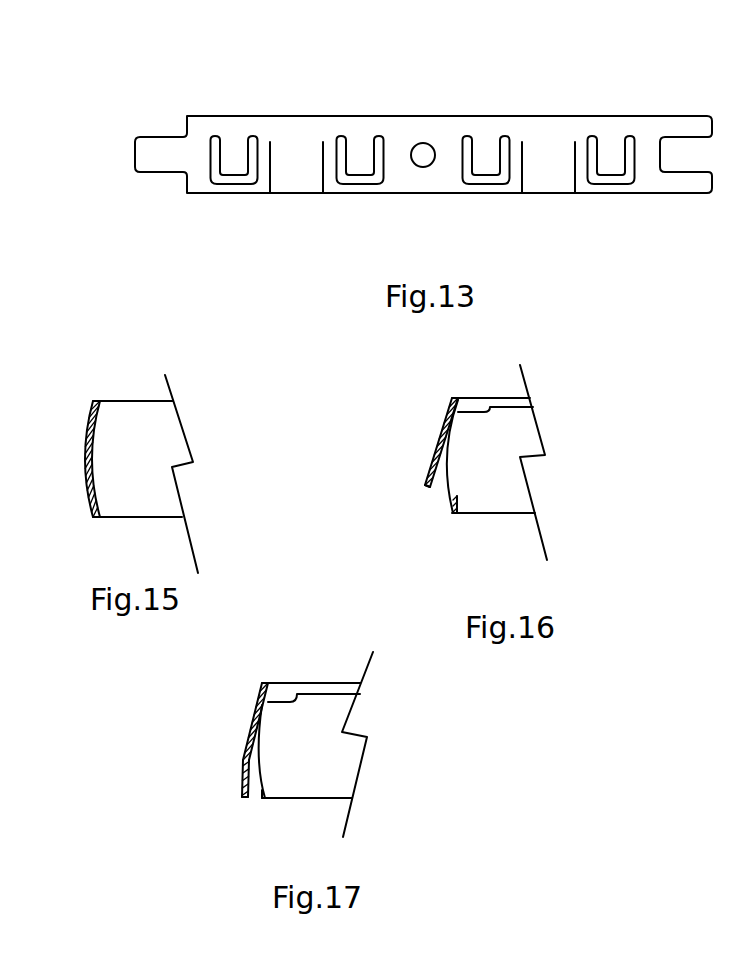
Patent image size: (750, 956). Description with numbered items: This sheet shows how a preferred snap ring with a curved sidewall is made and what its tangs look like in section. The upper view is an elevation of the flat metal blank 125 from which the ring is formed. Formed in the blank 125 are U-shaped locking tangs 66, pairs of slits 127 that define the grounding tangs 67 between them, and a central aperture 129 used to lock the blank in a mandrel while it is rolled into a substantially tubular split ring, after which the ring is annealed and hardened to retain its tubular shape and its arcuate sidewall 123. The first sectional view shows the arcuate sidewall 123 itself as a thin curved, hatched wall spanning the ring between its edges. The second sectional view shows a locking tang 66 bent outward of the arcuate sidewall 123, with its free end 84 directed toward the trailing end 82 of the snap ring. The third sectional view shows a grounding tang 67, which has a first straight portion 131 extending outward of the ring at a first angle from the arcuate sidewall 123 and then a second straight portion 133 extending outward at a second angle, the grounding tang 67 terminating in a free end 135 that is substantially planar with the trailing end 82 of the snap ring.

In FIG. 13, the flat metal blank 125 is at (144, 118).
In FIG. 13, the locking tang 66 is at (234, 168).
In FIG. 16, the locking tang 66 is at (437, 461).
In FIG. 13, the grounding tang 67 is at (547, 183).
In FIG. 17, the grounding tang 67 is at (174, 768).
In FIG. 13, the slit 127 is at (323, 170).
In FIG. 13, the aperture 129 is at (421, 148).
In FIG. 15, the arcuate sidewall 123 is at (87, 450).
In FIG. 16, the arcuate sidewall 123 is at (533, 406).
In FIG. 17, the arcuate sidewall 123 is at (297, 693).
In FIG. 16, the trailing end 82 is at (493, 514).
In FIG. 17, the trailing end 82 is at (307, 799).
In FIG. 16, the free end 84 is at (427, 487).
In FIG. 17, the first straight portion 131 is at (250, 738).
In FIG. 17, the second straight portion 133 is at (243, 783).
In FIG. 17, the free end 135 is at (245, 800).